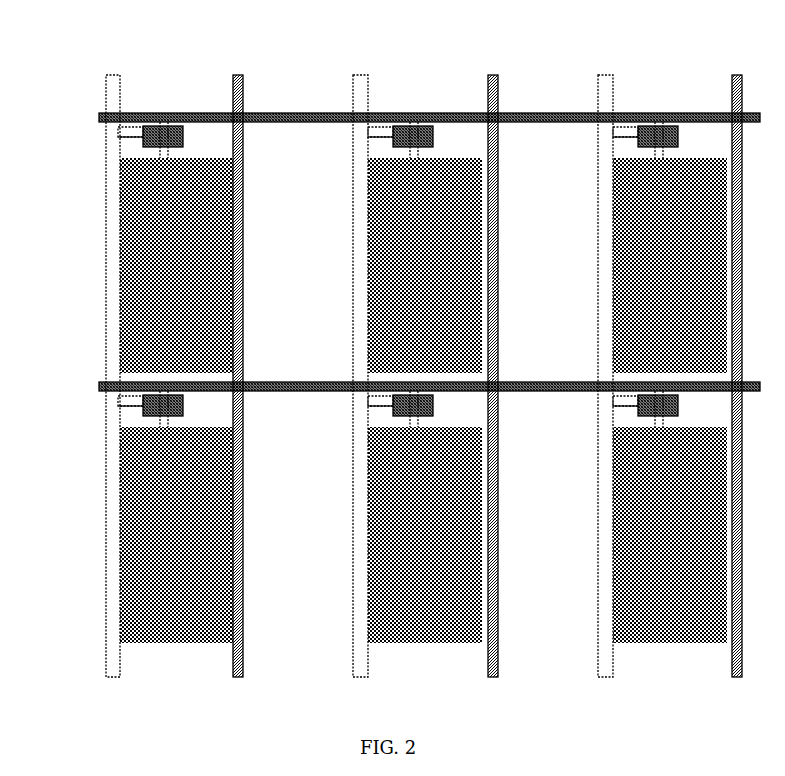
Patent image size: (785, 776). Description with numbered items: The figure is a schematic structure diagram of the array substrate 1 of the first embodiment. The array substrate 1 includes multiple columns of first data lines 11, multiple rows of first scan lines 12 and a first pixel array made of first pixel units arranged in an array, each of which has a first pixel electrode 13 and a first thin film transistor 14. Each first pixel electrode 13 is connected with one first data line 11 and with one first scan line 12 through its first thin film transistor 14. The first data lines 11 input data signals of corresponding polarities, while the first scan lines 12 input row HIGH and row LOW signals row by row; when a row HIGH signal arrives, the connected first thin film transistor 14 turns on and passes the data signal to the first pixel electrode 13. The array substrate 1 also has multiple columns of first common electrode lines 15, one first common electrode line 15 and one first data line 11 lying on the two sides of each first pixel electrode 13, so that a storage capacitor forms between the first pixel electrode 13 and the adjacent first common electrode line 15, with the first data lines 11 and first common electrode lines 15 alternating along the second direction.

The array substrate 1 is at (660, 67).
The first data line 11 is at (108, 77).
The first scan line 12 is at (100, 117).
The first pixel electrode 13 is at (120, 207).
The first thin film transistor 14 is at (143, 146).
The first common electrode line 15 is at (240, 74).